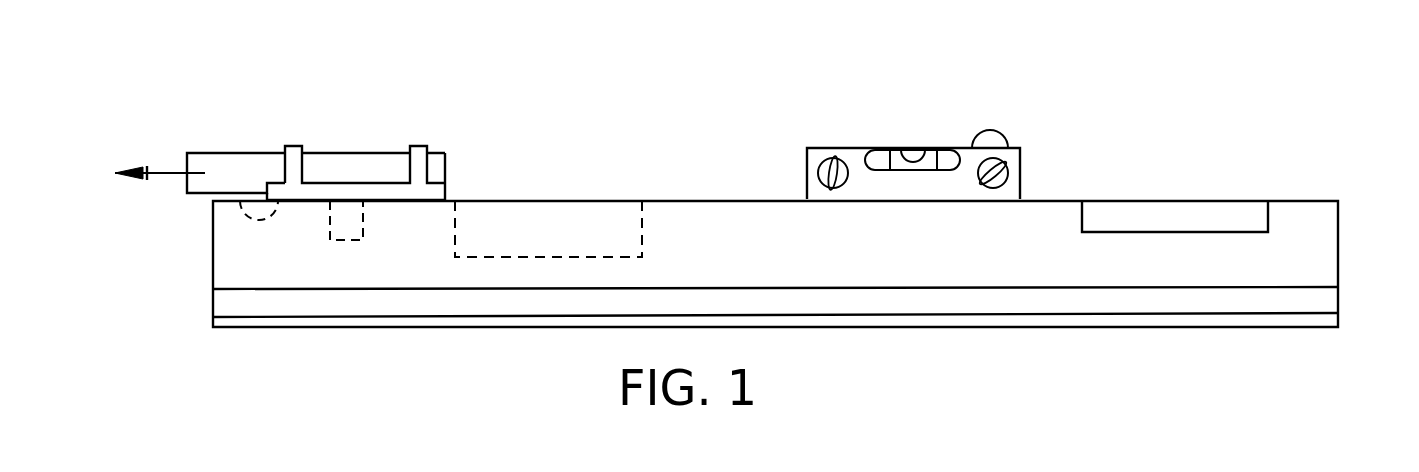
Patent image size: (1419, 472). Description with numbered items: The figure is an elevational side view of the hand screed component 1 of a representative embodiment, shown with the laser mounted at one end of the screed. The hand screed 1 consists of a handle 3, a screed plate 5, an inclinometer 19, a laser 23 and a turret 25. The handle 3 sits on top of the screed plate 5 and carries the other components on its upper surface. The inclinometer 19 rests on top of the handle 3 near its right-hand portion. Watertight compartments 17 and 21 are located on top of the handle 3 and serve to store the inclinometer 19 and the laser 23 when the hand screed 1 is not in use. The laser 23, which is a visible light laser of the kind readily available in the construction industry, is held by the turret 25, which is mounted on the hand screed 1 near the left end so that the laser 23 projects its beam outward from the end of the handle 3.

The hand screed component 1 is at (700, 109).
The handle 3 is at (1328, 232).
The screed plate 5 is at (1327, 322).
The watertight compartment 17 is at (1138, 215).
The inclinometer 19 is at (812, 120).
The watertight compartment 21 is at (563, 222).
The laser 23 is at (243, 163).
The turret 25 is at (430, 146).